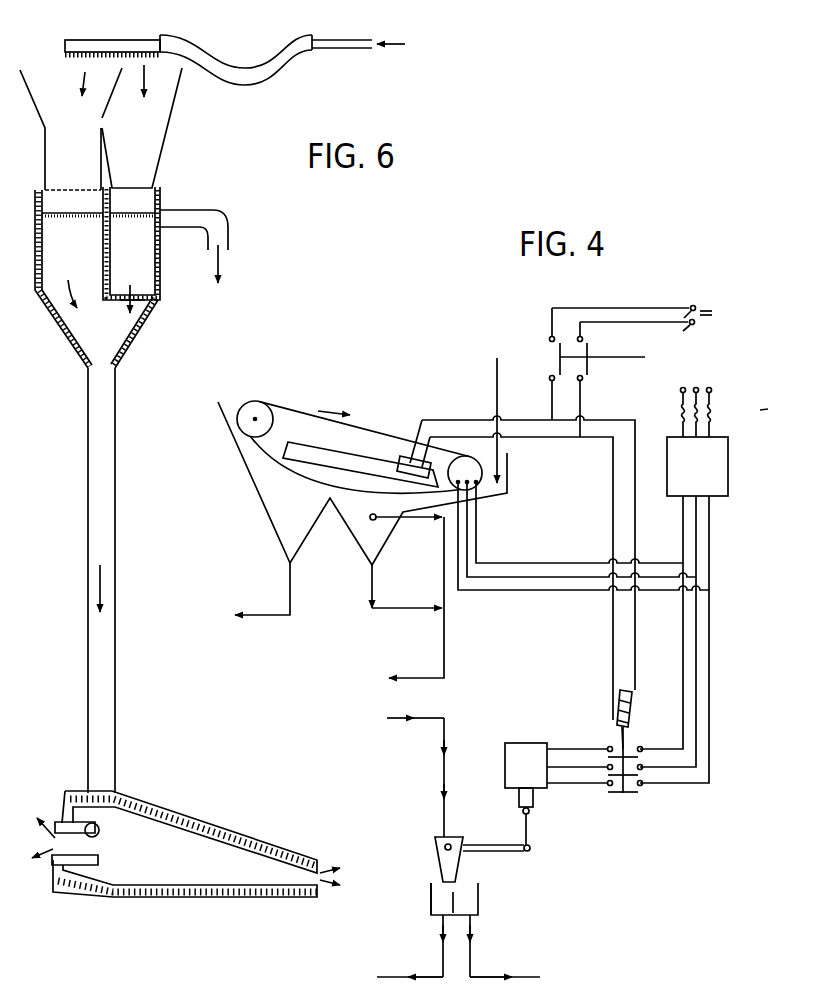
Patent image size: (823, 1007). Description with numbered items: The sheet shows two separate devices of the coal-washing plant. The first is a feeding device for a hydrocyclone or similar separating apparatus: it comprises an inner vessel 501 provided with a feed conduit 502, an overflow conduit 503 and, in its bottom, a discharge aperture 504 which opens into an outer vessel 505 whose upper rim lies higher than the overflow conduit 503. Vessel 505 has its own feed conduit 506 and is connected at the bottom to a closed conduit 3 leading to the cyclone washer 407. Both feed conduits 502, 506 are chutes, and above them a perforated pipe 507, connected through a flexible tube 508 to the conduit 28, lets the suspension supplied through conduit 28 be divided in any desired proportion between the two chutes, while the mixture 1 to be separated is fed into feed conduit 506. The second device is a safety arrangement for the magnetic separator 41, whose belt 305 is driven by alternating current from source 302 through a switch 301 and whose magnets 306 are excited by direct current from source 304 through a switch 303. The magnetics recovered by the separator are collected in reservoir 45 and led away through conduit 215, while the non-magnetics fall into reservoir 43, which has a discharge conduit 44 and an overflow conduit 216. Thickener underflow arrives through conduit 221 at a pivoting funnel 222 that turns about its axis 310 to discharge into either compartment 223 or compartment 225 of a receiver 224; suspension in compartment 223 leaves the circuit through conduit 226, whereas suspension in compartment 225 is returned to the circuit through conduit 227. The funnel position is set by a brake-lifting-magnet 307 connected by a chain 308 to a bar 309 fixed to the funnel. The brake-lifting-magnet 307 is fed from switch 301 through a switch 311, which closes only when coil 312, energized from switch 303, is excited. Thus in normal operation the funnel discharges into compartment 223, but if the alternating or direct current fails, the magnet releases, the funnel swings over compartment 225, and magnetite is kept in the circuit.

In FIG. 6, the mixture 1 is at (69, 110).
In FIG. 6, the perforated pipe 507 is at (108, 42).
In FIG. 6, the flexible tube 508 is at (253, 73).
In FIG. 6, the conduit 28 is at (342, 49).
In FIG. 6, the feed conduit 506 is at (83, 129).
In FIG. 6, the feed conduit 502 is at (142, 126).
In FIG. 6, the overflow conduit 503 is at (182, 213).
In FIG. 6, the vessel 505 is at (96, 279).
In FIG. 6, the vessel 501 is at (131, 250).
In FIG. 6, the discharge aperture 504 is at (138, 300).
In FIG. 6, the closed conduit 3 is at (115, 512).
In FIG. 6, the cyclone washer 407 is at (186, 844).
In FIG. 4, the belt 305 is at (372, 430).
In FIG. 4, the magnetic separator 41 is at (360, 457).
In FIG. 4, the magnets 306 is at (402, 468).
In FIG. 4, the reservoir 45 is at (362, 461).
In FIG. 4, the reservoir 43 is at (400, 531).
In FIG. 4, the overflow conduit 216 is at (445, 550).
In FIG. 4, the conduit 215 is at (291, 608).
In FIG. 4, the discharge conduit 44 is at (401, 609).
In FIG. 4, the switch 303 is at (603, 357).
In FIG. 4, the source of direct current 304 is at (636, 328).
In FIG. 4, the source of alternating current 302 is at (695, 396).
In FIG. 4, the switch 301 is at (684, 610).
In FIG. 4, the coil 312 is at (630, 696).
In FIG. 4, the brake-lifting-magnet 307 is at (556, 765).
In FIG. 4, the switch 311 is at (626, 795).
In FIG. 4, the chain 308 is at (531, 823).
In FIG. 4, the bar 309 is at (487, 845).
In FIG. 4, the axis 310 is at (435, 843).
In FIG. 4, the conduit 221 is at (442, 773).
In FIG. 4, the pivoting funnel 222 is at (437, 867).
In FIG. 4, the receiver 224 is at (480, 889).
In FIG. 4, the compartment 225 is at (430, 907).
In FIG. 4, the compartment 223 is at (483, 906).
In FIG. 4, the conduit 227 is at (393, 967).
In FIG. 4, the conduit 226 is at (487, 975).